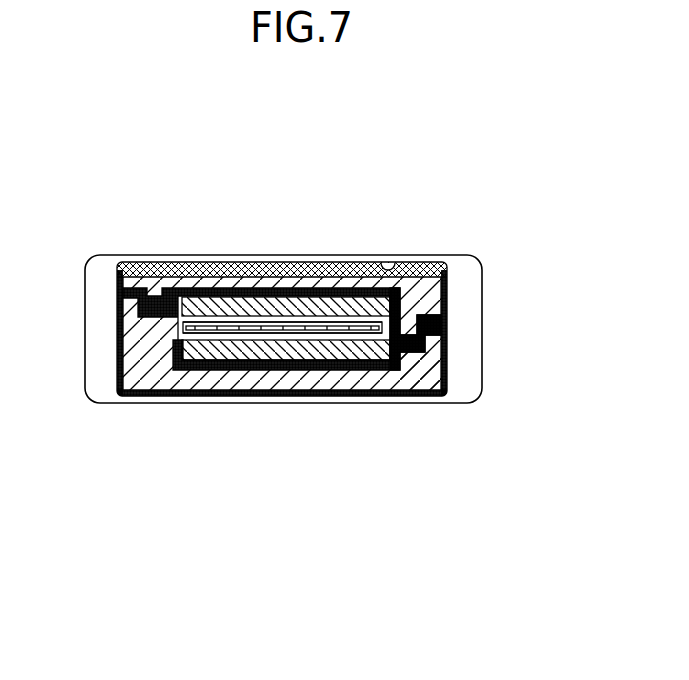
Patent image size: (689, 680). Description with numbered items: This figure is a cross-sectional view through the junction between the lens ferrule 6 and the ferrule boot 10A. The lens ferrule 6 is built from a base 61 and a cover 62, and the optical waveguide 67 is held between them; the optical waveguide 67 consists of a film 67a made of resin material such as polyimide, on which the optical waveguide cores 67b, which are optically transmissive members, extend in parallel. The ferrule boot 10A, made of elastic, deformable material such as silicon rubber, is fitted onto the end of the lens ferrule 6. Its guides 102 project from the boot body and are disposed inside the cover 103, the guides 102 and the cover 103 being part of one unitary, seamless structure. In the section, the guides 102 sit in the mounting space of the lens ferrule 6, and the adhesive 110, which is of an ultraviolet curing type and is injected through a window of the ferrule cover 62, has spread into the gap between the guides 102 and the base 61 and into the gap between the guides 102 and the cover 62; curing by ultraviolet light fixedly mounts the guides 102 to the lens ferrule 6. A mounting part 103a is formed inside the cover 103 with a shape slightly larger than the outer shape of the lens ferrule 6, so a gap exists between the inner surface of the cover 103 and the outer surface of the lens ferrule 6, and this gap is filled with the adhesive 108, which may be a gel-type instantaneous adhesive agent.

The lens ferrule 6 is at (99, 159).
The ferrule boot 10A is at (476, 247).
The base 61 is at (409, 386).
The cover 62 is at (435, 273).
The optical waveguide 67 is at (375, 200).
The film 67a is at (297, 322).
The optical waveguide cores 67b is at (352, 332).
The guides 102 is at (260, 350).
The cover 103 is at (467, 327).
The mounting part 103a is at (399, 262).
The adhesive 108 is at (190, 263).
The adhesive 110 is at (133, 287).